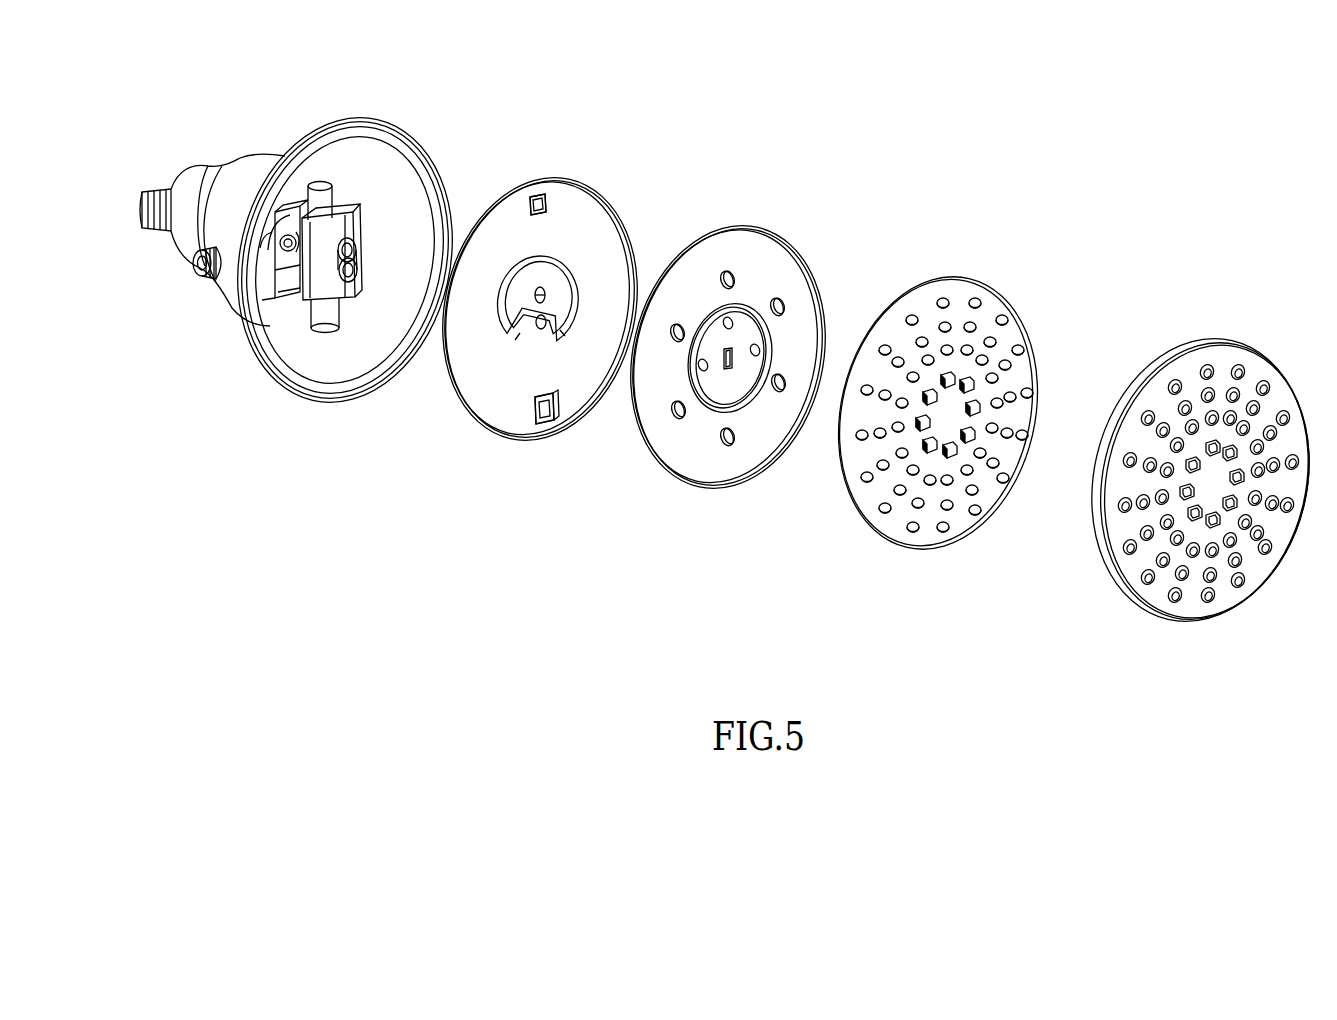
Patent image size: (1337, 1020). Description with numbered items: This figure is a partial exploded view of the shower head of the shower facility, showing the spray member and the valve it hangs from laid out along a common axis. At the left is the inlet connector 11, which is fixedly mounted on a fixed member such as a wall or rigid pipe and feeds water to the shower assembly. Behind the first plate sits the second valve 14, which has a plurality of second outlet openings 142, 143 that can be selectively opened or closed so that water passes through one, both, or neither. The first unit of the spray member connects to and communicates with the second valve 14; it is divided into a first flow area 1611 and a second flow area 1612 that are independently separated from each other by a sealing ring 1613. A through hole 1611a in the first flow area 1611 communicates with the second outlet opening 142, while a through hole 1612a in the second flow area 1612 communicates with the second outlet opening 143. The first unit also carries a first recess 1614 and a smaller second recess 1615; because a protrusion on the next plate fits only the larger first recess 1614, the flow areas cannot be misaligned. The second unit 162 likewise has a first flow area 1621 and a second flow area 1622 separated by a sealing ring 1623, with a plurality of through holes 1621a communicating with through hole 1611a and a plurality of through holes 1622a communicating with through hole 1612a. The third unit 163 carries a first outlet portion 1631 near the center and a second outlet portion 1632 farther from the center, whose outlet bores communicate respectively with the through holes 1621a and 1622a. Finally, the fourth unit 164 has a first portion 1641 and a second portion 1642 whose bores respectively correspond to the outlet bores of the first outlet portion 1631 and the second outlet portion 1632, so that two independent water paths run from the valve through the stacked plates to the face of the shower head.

The inlet connector 11 is at (160, 197).
The second valve 14 is at (293, 283).
The second outlet opening 142 is at (318, 282).
The second outlet opening 143 is at (362, 258).
The first flow area 1611 is at (600, 280).
The through hole 1611a is at (531, 350).
The second flow area 1612 is at (598, 276).
The through hole 1612a is at (533, 273).
The sealing ring 1613 is at (563, 288).
The first recess 1614 is at (554, 424).
The second recess 1615 is at (536, 198).
The second unit 162 is at (750, 353).
The first flow area 1621 is at (712, 467).
The through hole 1621a is at (674, 422).
The second flow area 1622 is at (738, 387).
The through hole 1622a is at (758, 350).
The sealing ring 1623 is at (738, 318).
The third unit 163 is at (937, 479).
The first outlet portion 1631 is at (915, 532).
The second outlet portion 1632 is at (953, 457).
The fourth unit 164 is at (1201, 538).
The first portion 1641 is at (1208, 600).
The second portion 1642 is at (1232, 508).